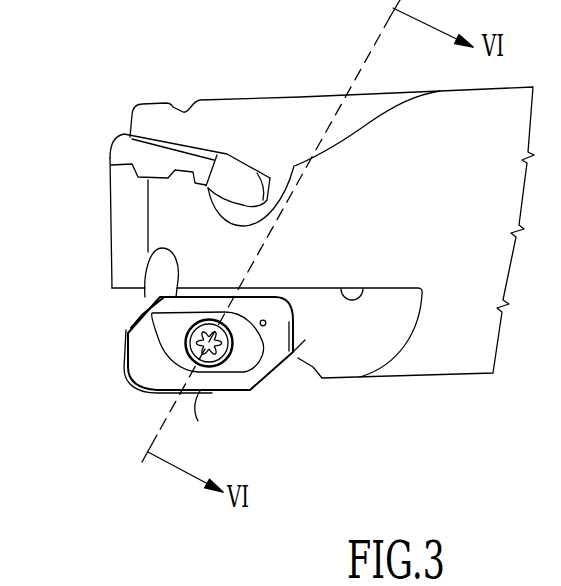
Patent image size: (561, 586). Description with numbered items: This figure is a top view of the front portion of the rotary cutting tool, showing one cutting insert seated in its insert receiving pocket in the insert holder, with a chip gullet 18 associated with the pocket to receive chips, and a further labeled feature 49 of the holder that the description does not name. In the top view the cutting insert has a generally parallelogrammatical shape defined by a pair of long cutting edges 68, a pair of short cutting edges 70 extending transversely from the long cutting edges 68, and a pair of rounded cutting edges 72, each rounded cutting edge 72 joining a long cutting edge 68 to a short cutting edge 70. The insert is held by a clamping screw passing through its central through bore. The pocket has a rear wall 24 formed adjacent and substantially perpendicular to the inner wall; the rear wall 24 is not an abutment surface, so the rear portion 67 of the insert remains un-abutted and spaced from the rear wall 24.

The chip gullet 18 is at (390, 335).
The rear wall 24 is at (251, 391).
The locating pin hole 49 is at (348, 290).
The rear portion 67 is at (290, 366).
The long cutting edges 68 is at (195, 391).
The short cutting edges 70 is at (143, 313).
The rounded cutting edges 72 is at (117, 360).